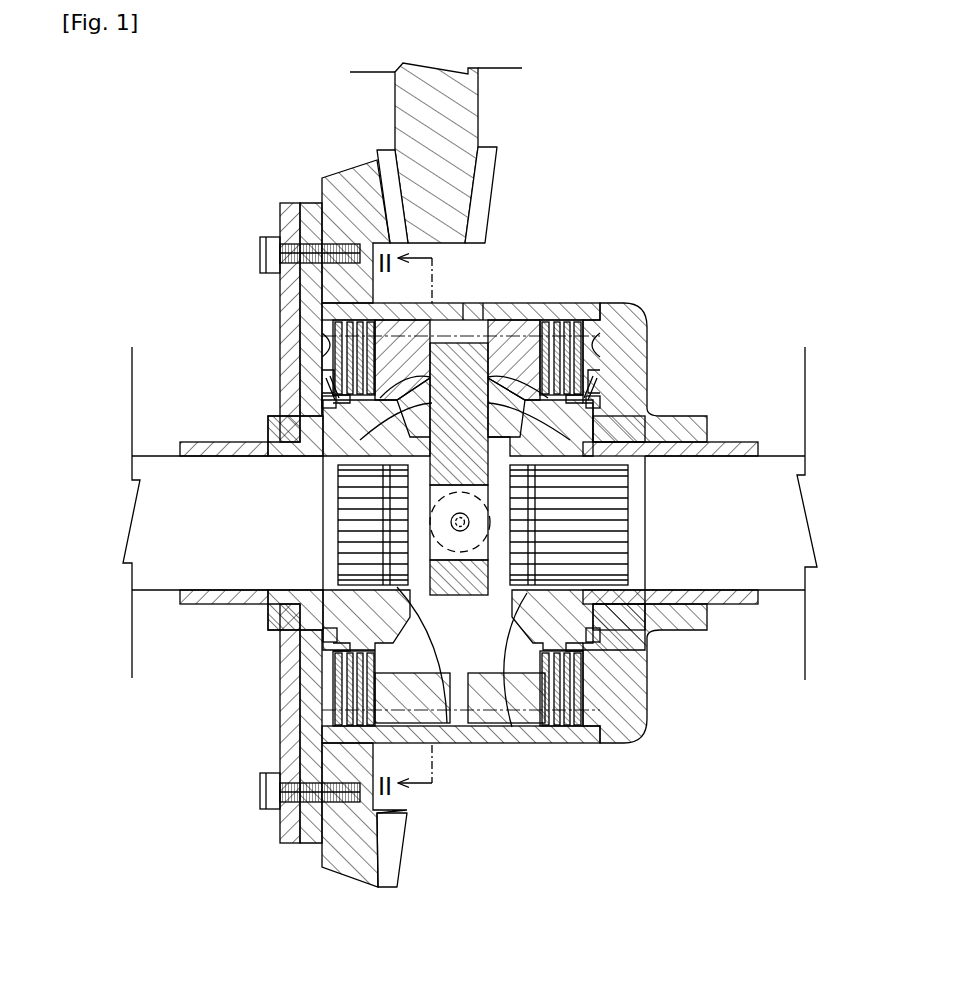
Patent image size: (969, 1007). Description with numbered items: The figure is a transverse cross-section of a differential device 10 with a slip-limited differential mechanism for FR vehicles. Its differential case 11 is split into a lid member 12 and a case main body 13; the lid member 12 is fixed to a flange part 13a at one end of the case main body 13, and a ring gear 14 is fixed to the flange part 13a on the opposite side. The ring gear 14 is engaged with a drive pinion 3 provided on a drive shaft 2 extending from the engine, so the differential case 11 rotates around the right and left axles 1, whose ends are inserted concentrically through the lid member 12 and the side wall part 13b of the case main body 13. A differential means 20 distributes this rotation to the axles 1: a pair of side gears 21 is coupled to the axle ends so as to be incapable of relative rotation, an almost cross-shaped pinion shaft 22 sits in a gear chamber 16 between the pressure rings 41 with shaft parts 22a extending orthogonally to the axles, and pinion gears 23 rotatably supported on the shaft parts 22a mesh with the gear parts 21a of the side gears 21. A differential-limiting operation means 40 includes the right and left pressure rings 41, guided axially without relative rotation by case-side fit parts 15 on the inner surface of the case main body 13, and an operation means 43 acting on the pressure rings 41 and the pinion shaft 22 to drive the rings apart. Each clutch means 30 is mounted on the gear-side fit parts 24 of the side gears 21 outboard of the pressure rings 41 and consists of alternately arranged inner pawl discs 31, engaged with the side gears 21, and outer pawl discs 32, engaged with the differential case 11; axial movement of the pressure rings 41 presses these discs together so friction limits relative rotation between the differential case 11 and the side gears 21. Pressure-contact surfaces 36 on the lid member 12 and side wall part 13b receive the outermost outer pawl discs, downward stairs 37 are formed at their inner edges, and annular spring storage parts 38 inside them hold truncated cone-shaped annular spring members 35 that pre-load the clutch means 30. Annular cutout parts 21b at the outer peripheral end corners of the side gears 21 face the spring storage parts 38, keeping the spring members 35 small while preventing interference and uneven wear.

The axle 1 is at (160, 468).
The drive shaft 2 is at (470, 91).
The drive pinion 3 is at (497, 195).
The differential device 10 is at (657, 277).
The differential case 11 is at (616, 298).
The lid member 12 is at (325, 340).
The case main body 13 is at (477, 487).
The flange part 13a is at (313, 208).
The side wall part 13b is at (632, 387).
The ring gear 14 is at (343, 168).
The case-side fit part 15 is at (458, 722).
The gear chamber 16 is at (444, 643).
The differential means 20 is at (618, 615).
The side gear 21 is at (320, 620).
The gear part 21a is at (432, 648).
The cutout part 21b is at (318, 636).
The pinion shaft 22 is at (340, 520).
The shaft part 22a is at (430, 461).
The pinion gear 23 is at (408, 470).
The gear-side fit part 24 is at (318, 690).
The clutch means 30 is at (415, 535).
The inner pawl disc 31 is at (573, 320).
The outer pawl disc 32 is at (576, 726).
The annular spring member 35 is at (318, 395).
The pressure-contact surface 36 is at (335, 345).
The stair 37 is at (323, 385).
The spring storage part 38 is at (313, 403).
The differential-limiting operation means 40 is at (463, 317).
The pressure ring 41 is at (405, 330).
The operation means 43 is at (484, 317).